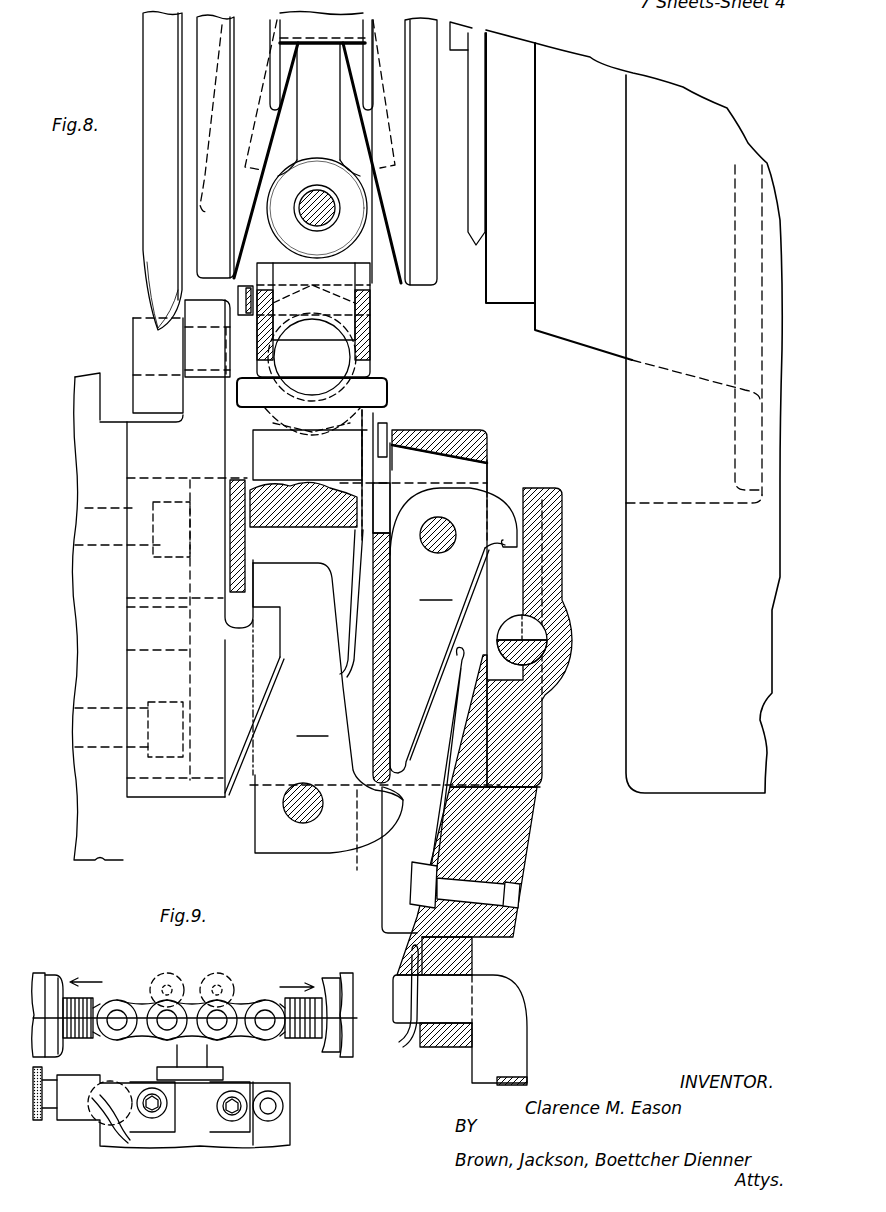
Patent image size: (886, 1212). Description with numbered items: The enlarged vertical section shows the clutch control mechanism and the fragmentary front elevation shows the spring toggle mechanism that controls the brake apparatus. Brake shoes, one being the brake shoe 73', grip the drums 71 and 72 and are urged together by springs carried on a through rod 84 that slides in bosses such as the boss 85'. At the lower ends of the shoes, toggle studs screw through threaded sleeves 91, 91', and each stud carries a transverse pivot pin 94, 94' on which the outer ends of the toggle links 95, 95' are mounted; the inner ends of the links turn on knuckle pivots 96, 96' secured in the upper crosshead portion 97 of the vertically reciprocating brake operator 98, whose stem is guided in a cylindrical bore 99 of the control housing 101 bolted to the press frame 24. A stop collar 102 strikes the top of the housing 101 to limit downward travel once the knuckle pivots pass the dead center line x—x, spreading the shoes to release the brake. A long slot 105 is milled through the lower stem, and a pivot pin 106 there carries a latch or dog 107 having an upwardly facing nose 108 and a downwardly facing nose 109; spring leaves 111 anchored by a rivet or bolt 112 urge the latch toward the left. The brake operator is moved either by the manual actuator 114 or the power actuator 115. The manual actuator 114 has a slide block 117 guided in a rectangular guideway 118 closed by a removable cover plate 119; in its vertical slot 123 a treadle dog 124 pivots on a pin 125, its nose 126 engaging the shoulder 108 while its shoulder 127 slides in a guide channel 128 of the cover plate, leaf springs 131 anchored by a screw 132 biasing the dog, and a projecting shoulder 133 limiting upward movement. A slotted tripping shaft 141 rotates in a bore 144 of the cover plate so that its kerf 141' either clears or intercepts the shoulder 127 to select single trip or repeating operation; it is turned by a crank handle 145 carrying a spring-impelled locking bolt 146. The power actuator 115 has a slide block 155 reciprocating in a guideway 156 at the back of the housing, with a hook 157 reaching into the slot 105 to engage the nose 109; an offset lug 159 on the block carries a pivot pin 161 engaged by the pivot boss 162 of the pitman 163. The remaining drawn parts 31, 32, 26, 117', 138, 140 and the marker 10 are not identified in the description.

In FIG. 8, the drum 72 is at (210, 32).
In FIG. 8, the brake shoe 73' is at (317, 148).
In FIG. 8, the drum 71 is at (425, 68).
In FIG. 8, the pitman 163 is at (150, 208).
In FIG. 8, the boss 85' is at (366, 208).
In FIG. 8, the through rod 84 is at (327, 220).
In FIG. 8, the upper crosshead portion 97 is at (287, 265).
In FIG. 9, the upper crosshead portion 97 is at (194, 1010).
In FIG. 8, the toggle links 95 is at (315, 305).
In FIG. 9, the toggle links 95 is at (142, 1002).
In FIG. 8, the strip 32 is at (472, 245).
In FIG. 8, the frame member 31 is at (560, 332).
In FIG. 8, the offset lug 159 is at (198, 305).
In FIG. 8, the pivot boss 162 is at (150, 300).
In FIG. 8, the pivot pin 161 is at (135, 328).
In FIG. 8, the power actuator 115 is at (124, 412).
In FIG. 8, the press frame 24 is at (88, 397).
In FIG. 8, the brake operator 98 is at (335, 366).
In FIG. 9, the brake operator 98 is at (180, 1058).
In FIG. 8, the stop collar 102 is at (250, 394).
In FIG. 9, the stop collar 102 is at (223, 1073).
In FIG. 8, the transverse rivet or bolt 112 is at (383, 420).
In FIG. 8, the manual actuator 114 is at (450, 428).
In FIG. 8, the slide block 117 is at (466, 436).
In FIG. 8, the housing 26 is at (637, 425).
In FIG. 8, the slide block 155 is at (142, 450).
In FIG. 8, the control housing 101 is at (228, 478).
In FIG. 9, the control housing 101 is at (186, 1138).
In FIG. 8, the rectangular guideway 156 is at (232, 505).
In FIG. 8, the cylindrical bore 99 is at (266, 485).
In FIG. 8, the long vertical slot 123 is at (480, 463).
In FIG. 8, the rectangular guide channel 128 is at (530, 500).
In FIG. 8, the rectangular guideway 118 is at (398, 544).
In FIG. 8, the pin 125 is at (442, 530).
In FIG. 8, the nose or shoulder 109 is at (267, 593).
In FIG. 8, the long slot 105 is at (318, 531).
In FIG. 8, the treadle latch or dog 124 is at (436, 590).
In FIG. 8, the shoulder 127 is at (503, 550).
In FIG. 8, the removable cover plate 119 is at (566, 562).
In FIG. 8, the spring leaves 111 is at (355, 628).
In FIG. 8, the transverse kerf or slot 141' is at (574, 619).
In FIG. 8, the slotted tripping shaft 141 is at (557, 640).
In FIG. 8, the bore 144 is at (555, 665).
In FIG. 8, the hook 157 is at (266, 656).
In FIG. 8, the latch or dog 107 is at (375, 716).
In FIG. 8, the nose or shoulder 126 is at (405, 745).
In FIG. 8, the leaf springs 131 is at (452, 740).
In FIG. 8, the outwardly projecting shoulder 133 is at (542, 784).
In FIG. 8, the pivot pin 106 is at (300, 825).
In FIG. 8, the nose or shoulder 108 is at (388, 830).
In FIG. 8, the rivet or screw 132 is at (520, 902).
In FIG. 8, the column 117' is at (482, 956).
In FIG. 8, the pipe 138 is at (530, 1050).
In FIG. 8, the pin 140 is at (428, 1030).
In FIG. 9, the section line 10 is at (72, 962).
In FIG. 9, the transverse pivot pin 94 is at (115, 993).
In FIG. 9, the knuckle pivot 96 is at (167, 992).
In FIG. 9, the knuckle pivot 96' is at (222, 993).
In FIG. 9, the toggle links 95' is at (249, 996).
In FIG. 9, the transverse pivot pin 94' is at (279, 1001).
In FIG. 9, the threaded sleeve 91 is at (67, 1019).
In FIG. 9, the threaded sleeve 91' is at (316, 1029).
In FIG. 9, the spring impelled locking bolt 146 is at (38, 1120).
In FIG. 9, the crank handle 145 is at (82, 1115).